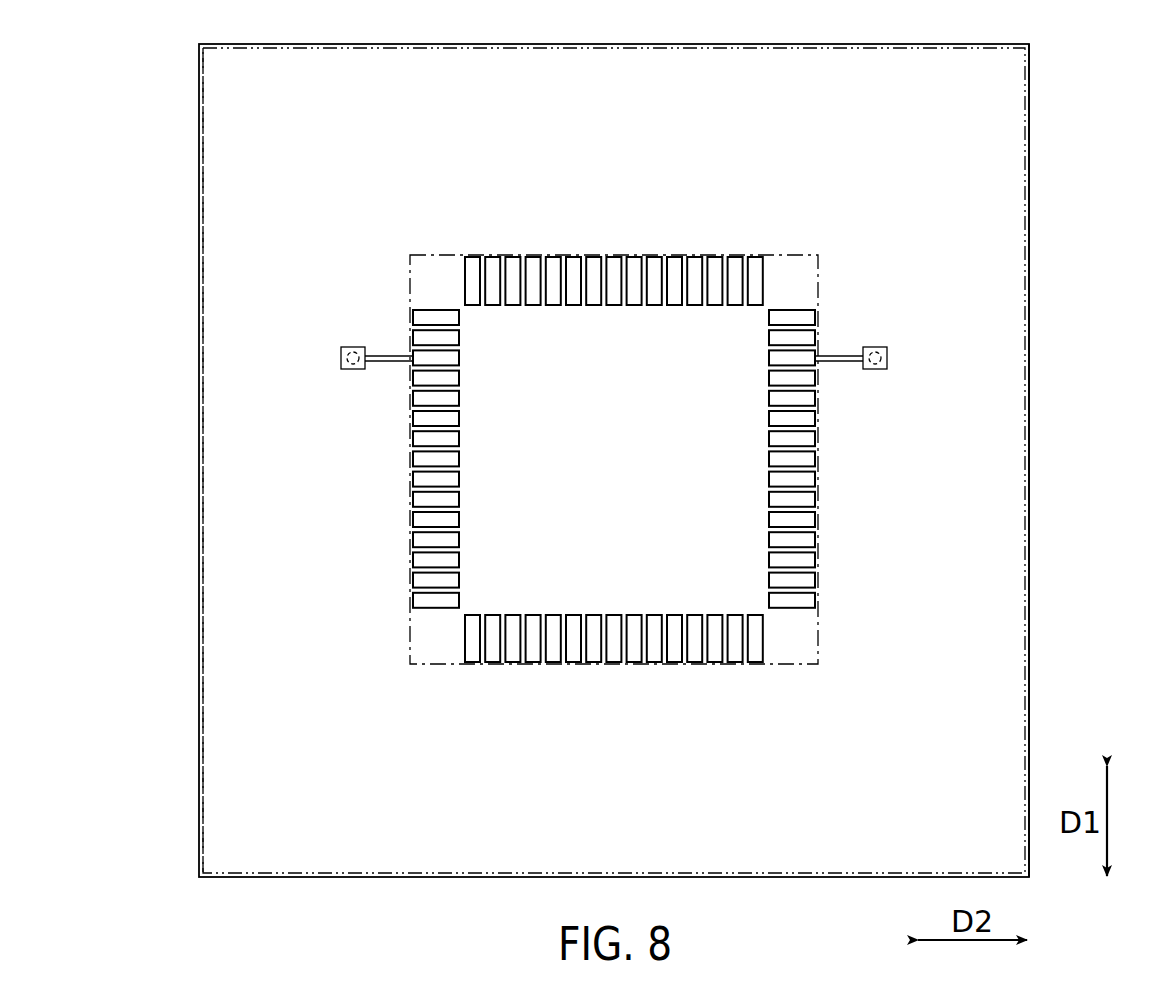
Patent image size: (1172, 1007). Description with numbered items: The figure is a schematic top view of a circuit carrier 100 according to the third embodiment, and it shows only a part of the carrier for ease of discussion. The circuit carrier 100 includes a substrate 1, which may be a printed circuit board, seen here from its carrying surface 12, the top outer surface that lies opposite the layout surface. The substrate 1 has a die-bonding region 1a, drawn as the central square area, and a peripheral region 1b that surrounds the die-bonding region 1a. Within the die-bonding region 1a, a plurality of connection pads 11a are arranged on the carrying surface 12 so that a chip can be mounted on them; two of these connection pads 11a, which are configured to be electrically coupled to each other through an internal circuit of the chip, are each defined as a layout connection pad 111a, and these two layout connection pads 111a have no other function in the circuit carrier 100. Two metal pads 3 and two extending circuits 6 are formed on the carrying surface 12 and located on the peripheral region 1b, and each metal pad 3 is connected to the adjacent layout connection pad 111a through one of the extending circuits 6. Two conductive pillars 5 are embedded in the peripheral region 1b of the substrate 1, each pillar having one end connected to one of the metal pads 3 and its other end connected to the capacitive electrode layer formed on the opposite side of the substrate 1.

The circuit carrier 100 is at (1063, 77).
The substrate 1 is at (200, 256).
The die-bonding region 1a is at (778, 252).
The peripheral region 1b is at (1031, 275).
The carrying surface 12 is at (227, 534).
The connection pads 11a is at (794, 609).
The layout connection pad 111a is at (445, 358).
The extending circuits 6 is at (389, 354).
The metal pads 3 is at (352, 371).
The conductive pillars 5 is at (342, 354).